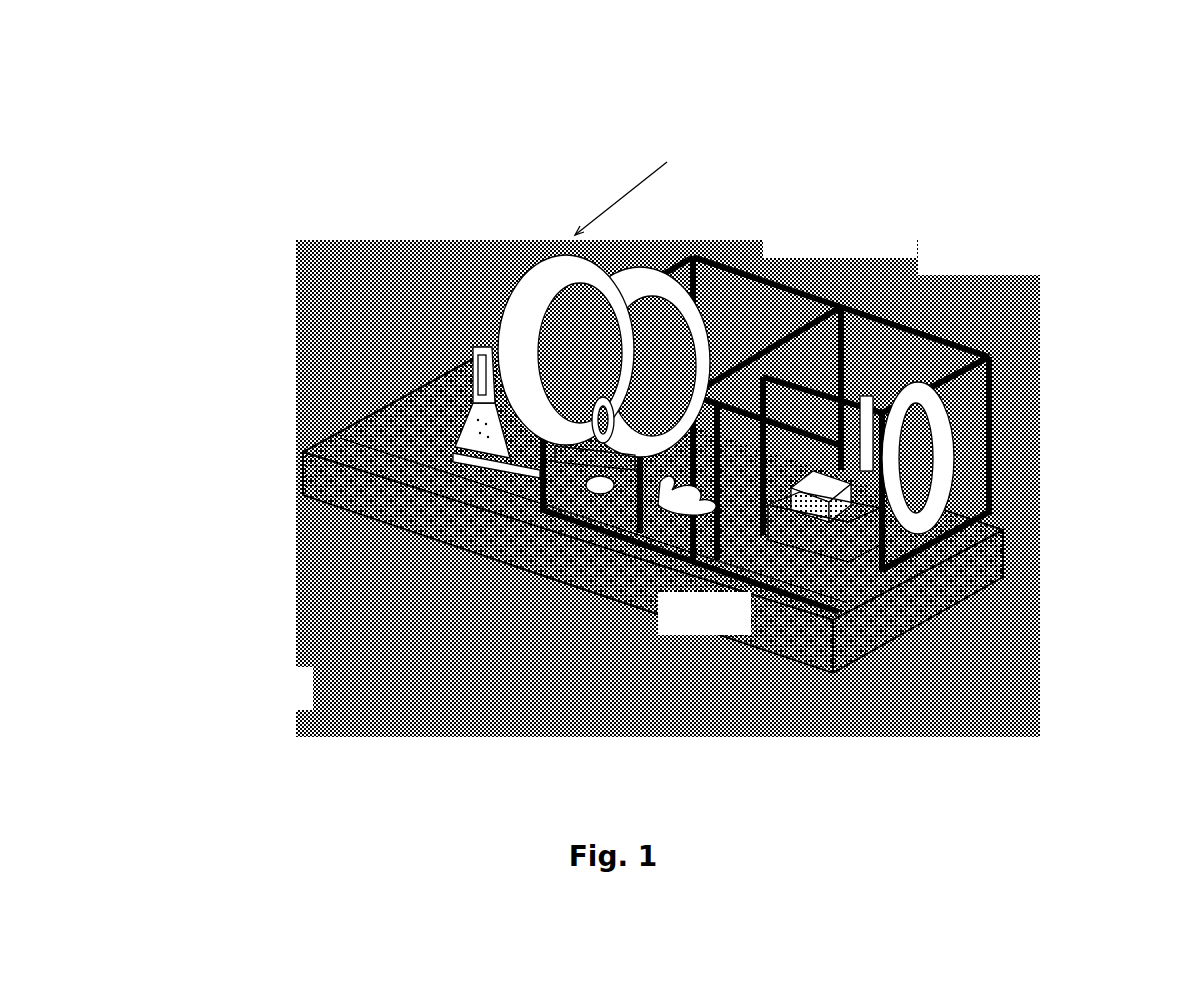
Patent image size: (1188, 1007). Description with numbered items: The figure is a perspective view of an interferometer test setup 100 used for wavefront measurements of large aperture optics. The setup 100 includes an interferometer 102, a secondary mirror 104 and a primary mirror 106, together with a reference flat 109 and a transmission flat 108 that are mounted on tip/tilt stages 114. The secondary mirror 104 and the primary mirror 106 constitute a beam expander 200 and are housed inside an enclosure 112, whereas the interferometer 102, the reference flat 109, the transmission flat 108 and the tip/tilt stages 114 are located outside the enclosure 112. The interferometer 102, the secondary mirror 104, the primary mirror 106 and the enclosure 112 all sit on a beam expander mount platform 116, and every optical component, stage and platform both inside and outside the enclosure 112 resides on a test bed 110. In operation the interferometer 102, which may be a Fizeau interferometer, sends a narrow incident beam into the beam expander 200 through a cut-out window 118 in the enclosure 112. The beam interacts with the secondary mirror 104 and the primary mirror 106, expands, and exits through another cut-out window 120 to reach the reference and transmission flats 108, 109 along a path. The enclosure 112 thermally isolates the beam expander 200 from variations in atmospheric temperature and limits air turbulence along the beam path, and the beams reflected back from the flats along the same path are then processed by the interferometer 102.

The interferometer test setup 100 is at (1118, 70).
The interferometer 102 is at (885, 415).
The secondary mirror 104 is at (578, 453).
The primary mirror 106 is at (913, 543).
The transmission flat 108 is at (588, 346).
The reference flat 109 is at (536, 345).
The test bed 110 is at (357, 465).
The enclosure 112 is at (790, 440).
The tip/tilt stages 114 is at (592, 335).
The beam expander mount platform 116 is at (1000, 523).
The cut-out window 118 is at (785, 452).
The cut-out window 120 is at (668, 332).
The beam expander 200 is at (863, 342).